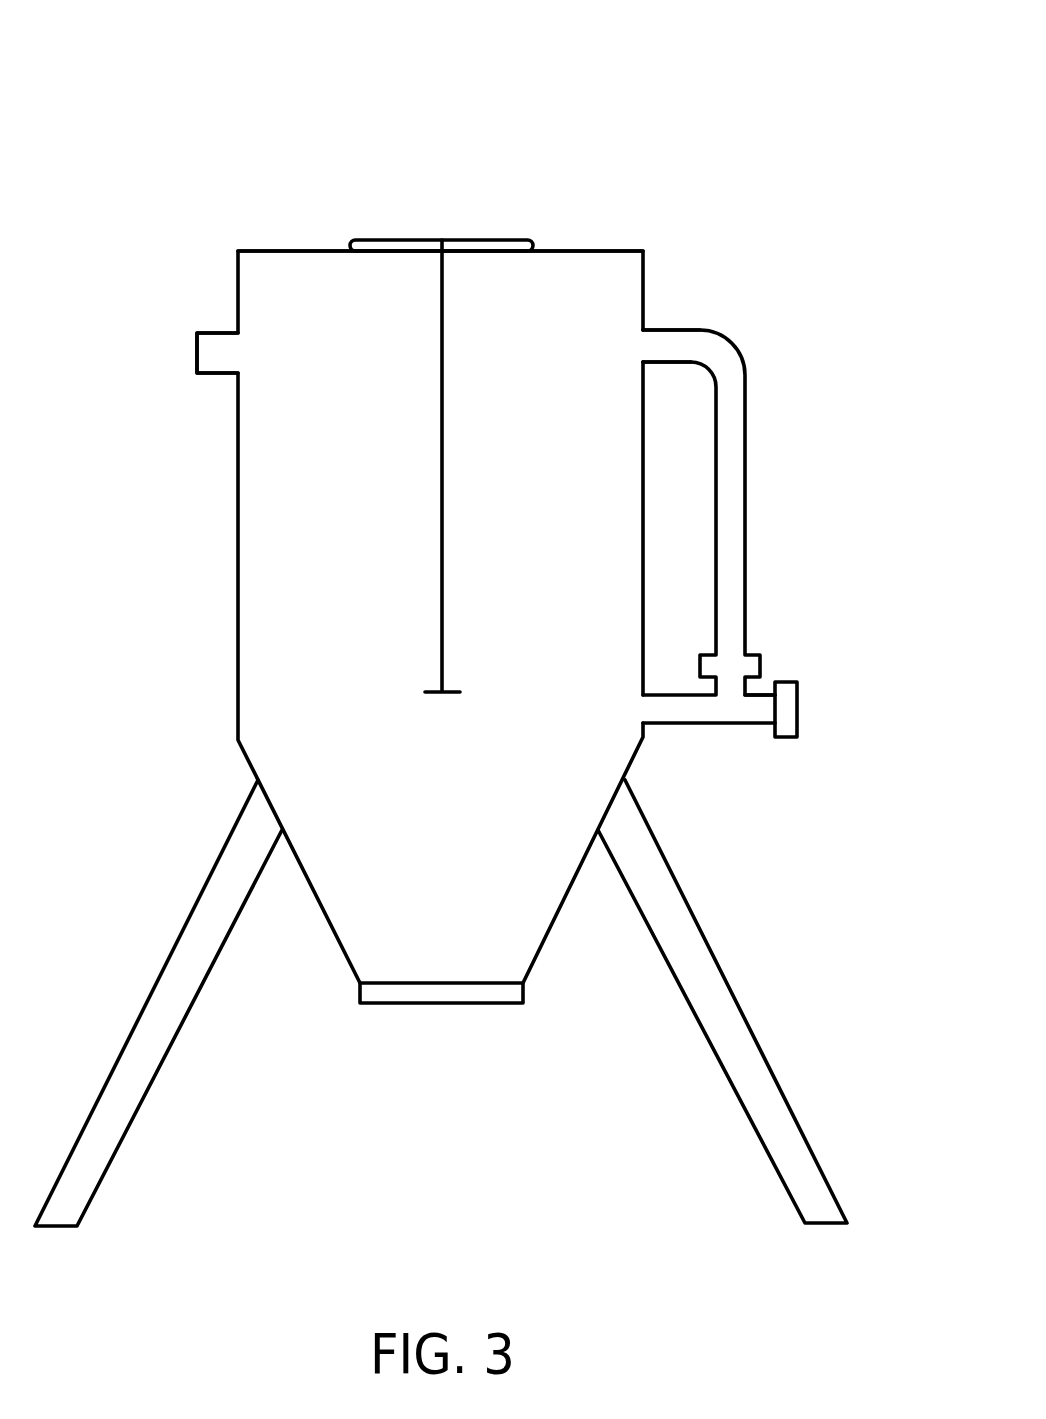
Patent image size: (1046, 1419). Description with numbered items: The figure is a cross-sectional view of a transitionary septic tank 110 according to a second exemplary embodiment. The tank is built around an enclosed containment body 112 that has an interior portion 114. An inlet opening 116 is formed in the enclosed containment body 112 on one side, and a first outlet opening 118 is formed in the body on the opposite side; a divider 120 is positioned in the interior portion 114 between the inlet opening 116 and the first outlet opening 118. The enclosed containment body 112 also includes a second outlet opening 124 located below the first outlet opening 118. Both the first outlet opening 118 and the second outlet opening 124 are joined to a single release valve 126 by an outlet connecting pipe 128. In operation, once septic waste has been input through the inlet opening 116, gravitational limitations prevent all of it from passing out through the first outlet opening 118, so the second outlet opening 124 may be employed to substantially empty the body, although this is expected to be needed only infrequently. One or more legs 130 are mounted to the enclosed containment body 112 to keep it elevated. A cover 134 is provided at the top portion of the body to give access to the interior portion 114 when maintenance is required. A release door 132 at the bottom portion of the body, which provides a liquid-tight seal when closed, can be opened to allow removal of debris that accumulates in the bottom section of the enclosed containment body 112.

The transitionary septic tank 110 is at (680, 148).
The enclosed containment body 112 is at (646, 254).
The interior portion 114 is at (300, 597).
The inlet opening 116 is at (218, 333).
The first outlet opening 118 is at (646, 330).
The divider 120 is at (442, 322).
The second outlet opening 124 is at (662, 723).
The release valve 126 is at (797, 707).
The outlet connecting pipe 128 is at (745, 483).
The legs 130 is at (155, 983).
The release door 132 is at (460, 1003).
The cover 134 is at (440, 240).